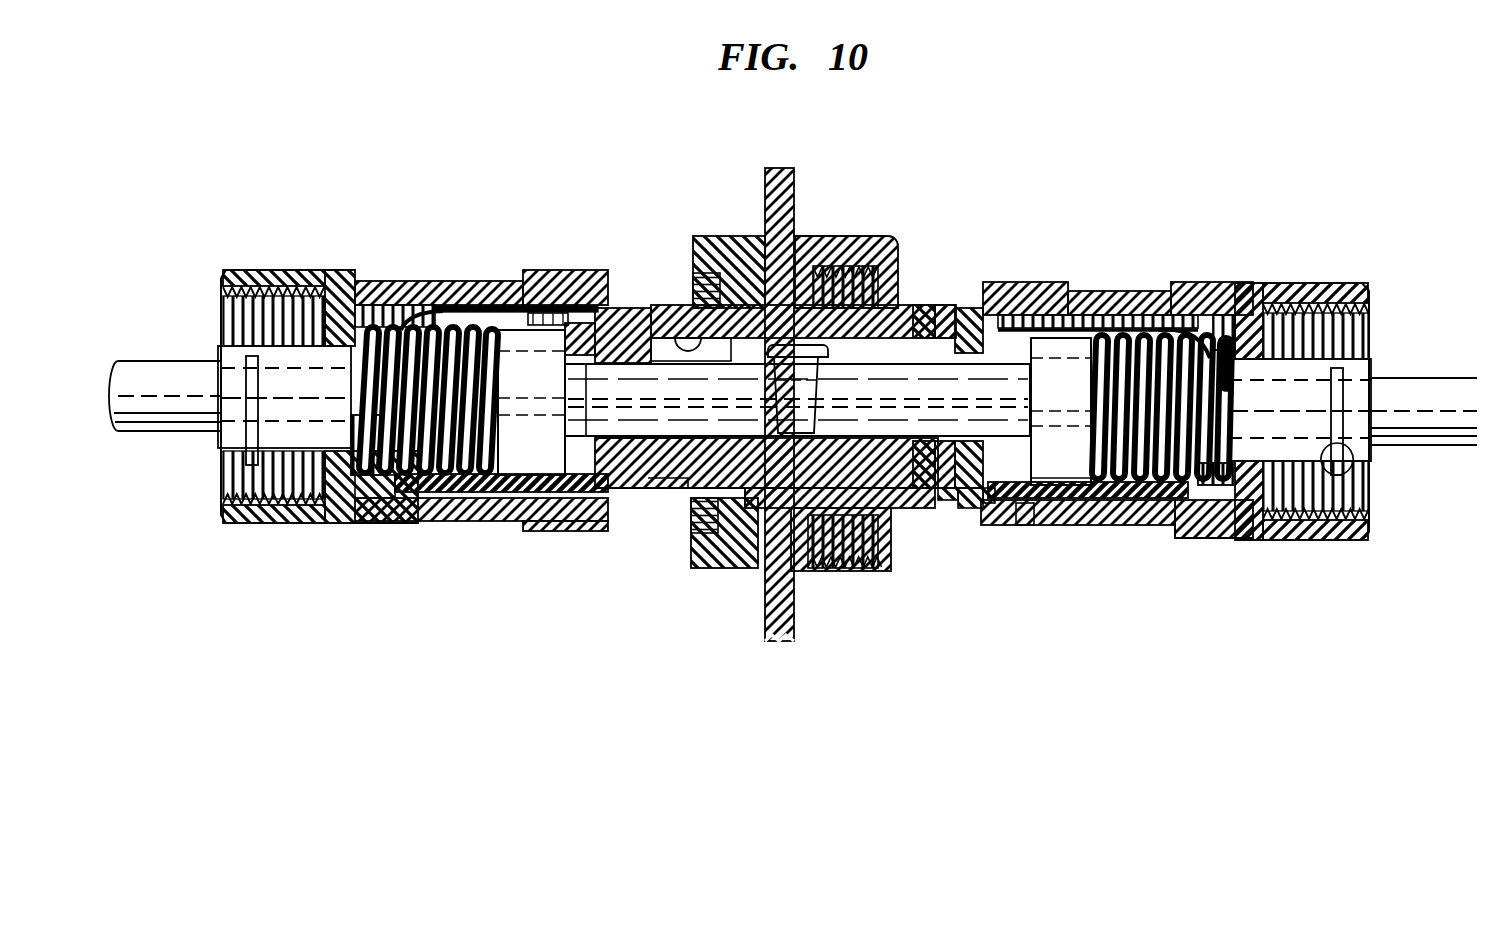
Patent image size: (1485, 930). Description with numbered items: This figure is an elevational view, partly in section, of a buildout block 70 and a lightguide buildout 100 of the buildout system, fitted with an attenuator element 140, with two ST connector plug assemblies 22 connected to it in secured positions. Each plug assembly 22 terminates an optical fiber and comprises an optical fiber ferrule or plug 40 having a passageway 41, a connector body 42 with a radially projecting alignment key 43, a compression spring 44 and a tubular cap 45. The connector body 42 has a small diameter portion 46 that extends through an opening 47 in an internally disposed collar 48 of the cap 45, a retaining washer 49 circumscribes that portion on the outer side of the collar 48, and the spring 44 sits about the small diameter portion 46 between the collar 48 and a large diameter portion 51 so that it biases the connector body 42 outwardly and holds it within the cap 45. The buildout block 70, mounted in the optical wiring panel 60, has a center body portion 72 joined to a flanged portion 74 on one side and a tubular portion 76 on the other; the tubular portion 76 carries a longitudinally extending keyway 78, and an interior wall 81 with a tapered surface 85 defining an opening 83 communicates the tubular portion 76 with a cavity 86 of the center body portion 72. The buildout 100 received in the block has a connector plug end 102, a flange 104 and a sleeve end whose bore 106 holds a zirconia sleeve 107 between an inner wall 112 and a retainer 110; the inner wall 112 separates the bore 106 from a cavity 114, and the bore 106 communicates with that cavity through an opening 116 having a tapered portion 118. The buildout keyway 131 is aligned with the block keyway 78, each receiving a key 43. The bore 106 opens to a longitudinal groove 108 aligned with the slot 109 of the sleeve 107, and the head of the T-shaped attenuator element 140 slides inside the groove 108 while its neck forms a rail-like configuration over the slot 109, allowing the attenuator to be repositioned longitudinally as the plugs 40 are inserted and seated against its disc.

The plug assembly 22 is at (318, 262).
The cavity 114 is at (428, 322).
The keyway 131 is at (546, 300).
The tapered portion 118 is at (579, 330).
The lightguide buildout 100 is at (620, 318).
The inner wall 112 is at (631, 297).
The groove 108 is at (654, 304).
The buildout block 70 is at (700, 228).
The optical wiring panel 60 is at (787, 166).
The attenuator element 140 is at (803, 337).
The slot 109 is at (847, 233).
The center body portion 72 is at (923, 297).
The tubular portion 76 is at (970, 297).
The optical fiber ferrule or plug 40 is at (554, 400).
The alignment key 43 is at (1071, 287).
The keyway 78 is at (1138, 313).
The compression spring 44 is at (1207, 333).
The opening 47 is at (1277, 343).
The retaining washer 49 is at (1343, 532).
The collar 48 is at (1247, 475).
The tubular cap 45 is at (1226, 524).
The small diameter portion 46 is at (1197, 478).
The large diameter portion 51 is at (1067, 470).
The connector body 42 is at (1017, 517).
The tapered surface 85 is at (982, 495).
The interior wall 81 is at (957, 500).
The opening 83 is at (943, 492).
The flanged portion 74 is at (697, 563).
The flange 104 is at (648, 500).
The bore 106 is at (640, 481).
The sleeve 107 is at (655, 476).
The opening 116 is at (636, 434).
The connector plug end 102 is at (487, 513).
The passageway 41 is at (578, 398).
The cavity 86 is at (912, 297).
The retainer 110 is at (960, 320).